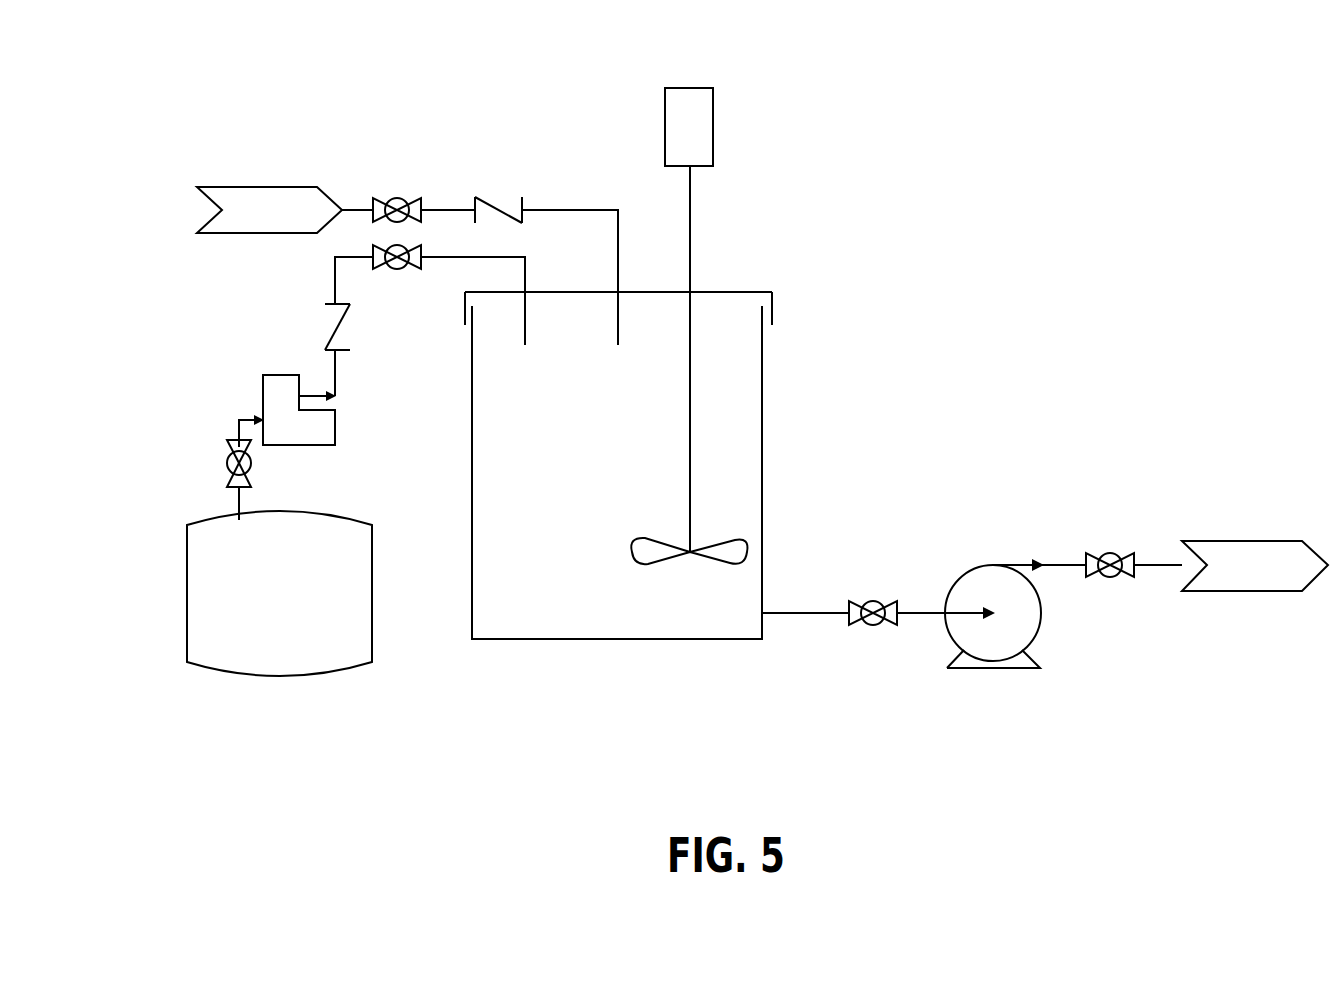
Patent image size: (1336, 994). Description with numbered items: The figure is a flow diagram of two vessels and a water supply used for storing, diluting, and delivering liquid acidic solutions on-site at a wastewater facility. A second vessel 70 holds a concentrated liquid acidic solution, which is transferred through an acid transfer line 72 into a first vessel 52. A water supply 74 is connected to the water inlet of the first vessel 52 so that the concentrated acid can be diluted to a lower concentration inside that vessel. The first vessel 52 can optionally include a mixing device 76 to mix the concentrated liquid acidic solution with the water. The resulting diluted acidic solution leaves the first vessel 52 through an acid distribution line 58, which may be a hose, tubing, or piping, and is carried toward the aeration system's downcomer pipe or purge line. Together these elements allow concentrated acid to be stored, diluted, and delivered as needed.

The first vessel 52 is at (762, 420).
The acid distribution line 58 is at (923, 613).
The second vessel 70 is at (343, 660).
The acid transfer line 72 is at (237, 440).
The water supply 74 is at (287, 200).
The mixing device 76 is at (705, 152).